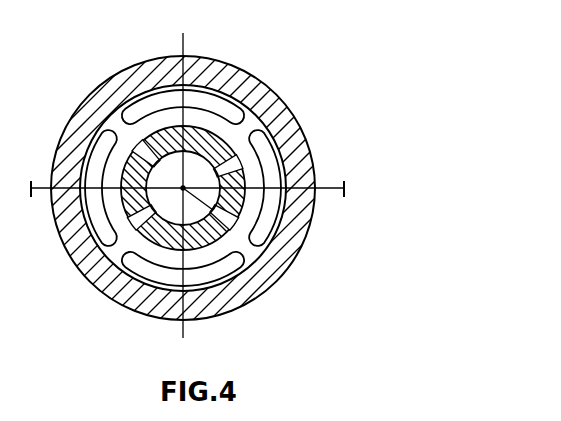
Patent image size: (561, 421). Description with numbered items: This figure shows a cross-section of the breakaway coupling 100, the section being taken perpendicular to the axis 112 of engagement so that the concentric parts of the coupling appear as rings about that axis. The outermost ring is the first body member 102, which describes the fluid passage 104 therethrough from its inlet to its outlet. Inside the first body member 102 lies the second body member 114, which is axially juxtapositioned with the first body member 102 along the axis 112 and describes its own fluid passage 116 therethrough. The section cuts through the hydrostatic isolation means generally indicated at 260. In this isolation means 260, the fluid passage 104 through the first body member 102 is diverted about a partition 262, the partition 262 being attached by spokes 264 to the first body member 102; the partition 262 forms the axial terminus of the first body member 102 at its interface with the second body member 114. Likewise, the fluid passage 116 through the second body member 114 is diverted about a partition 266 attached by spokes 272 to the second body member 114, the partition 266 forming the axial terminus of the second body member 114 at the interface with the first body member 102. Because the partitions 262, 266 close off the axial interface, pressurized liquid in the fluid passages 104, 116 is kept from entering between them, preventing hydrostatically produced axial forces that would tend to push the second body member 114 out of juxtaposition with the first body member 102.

The tool assembly 100 is at (264, 39).
The first body member 102 is at (194, 56).
The fluid passage 104 is at (140, 135).
The axis 112 is at (262, 240).
The second body member 114 is at (122, 127).
The fluid passage 116 is at (112, 146).
The hydrostatic isolation means 260 is at (148, 32).
The partition 262 is at (248, 73).
The spokes 264 is at (242, 114).
The partition 266 is at (282, 118).
The spokes 272 is at (213, 176).